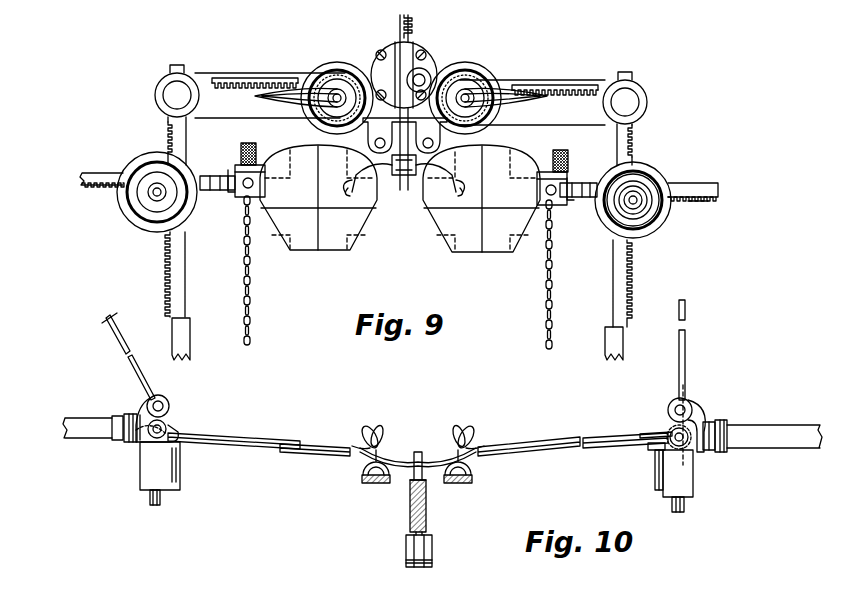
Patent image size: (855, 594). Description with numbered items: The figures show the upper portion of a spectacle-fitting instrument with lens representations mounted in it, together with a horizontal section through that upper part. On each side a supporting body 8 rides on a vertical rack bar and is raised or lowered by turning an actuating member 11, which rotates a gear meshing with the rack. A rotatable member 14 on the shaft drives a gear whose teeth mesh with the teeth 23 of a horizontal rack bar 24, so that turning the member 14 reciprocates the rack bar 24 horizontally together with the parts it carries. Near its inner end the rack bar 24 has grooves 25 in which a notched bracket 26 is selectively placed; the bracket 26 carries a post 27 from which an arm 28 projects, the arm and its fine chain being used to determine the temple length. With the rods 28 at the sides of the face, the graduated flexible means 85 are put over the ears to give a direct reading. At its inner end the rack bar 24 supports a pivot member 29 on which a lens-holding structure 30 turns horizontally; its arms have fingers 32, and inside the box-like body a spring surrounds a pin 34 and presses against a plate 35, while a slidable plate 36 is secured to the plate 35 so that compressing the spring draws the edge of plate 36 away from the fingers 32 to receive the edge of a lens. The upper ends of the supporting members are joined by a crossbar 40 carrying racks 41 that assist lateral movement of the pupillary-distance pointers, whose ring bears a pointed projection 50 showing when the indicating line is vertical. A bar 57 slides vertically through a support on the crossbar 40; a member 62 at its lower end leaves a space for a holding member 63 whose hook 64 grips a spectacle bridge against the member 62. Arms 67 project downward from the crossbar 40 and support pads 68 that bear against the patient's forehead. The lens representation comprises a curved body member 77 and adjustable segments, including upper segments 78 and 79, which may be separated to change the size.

In FIG. 9, the supporting body 8 is at (610, 176).
In FIG. 9, the actuating member 11 is at (618, 222).
In FIG. 10, the actuating member 11 is at (660, 372).
In FIG. 9, the member 14 is at (620, 206).
In FIG. 9, the teeth 23 is at (689, 202).
In FIG. 9, the rack bar 24 is at (672, 181).
In FIG. 10, the rack bar 24 is at (758, 430).
In FIG. 10, the grooves 25 is at (714, 418).
In FIG. 10, the bracket 26 is at (700, 410).
In FIG. 10, the post 27 is at (668, 404).
In FIG. 10, the arm 28 is at (686, 348).
In FIG. 10, the pivot member 29 is at (672, 430).
In FIG. 10, the lens-holding structure 30 is at (690, 485).
In FIG. 10, the fingers 32 is at (650, 434).
In FIG. 10, the pin 34 is at (686, 508).
In FIG. 10, the plate 35 is at (655, 455).
In FIG. 10, the plate 36 is at (655, 481).
In FIG. 9, the crossbar 40 is at (548, 83).
In FIG. 9, the racks 41 is at (232, 76).
In FIG. 9, the pointed projection 50 is at (335, 72).
In FIG. 10, the bar 57 is at (409, 514).
In FIG. 10, the member 62 is at (424, 500).
In FIG. 10, the holding member 63 is at (426, 538).
In FIG. 10, the hook 64 is at (419, 450).
In FIG. 9, the arms 67 is at (433, 140).
In FIG. 10, the arms 67 is at (385, 490).
In FIG. 10, the pads 68 is at (362, 470).
In FIG. 10, the curved body member 77 is at (572, 445).
In FIG. 10, the segment 78 is at (522, 445).
In FIG. 10, the segment 79 is at (598, 447).
In FIG. 9, the flexible means 85 is at (242, 256).
In FIG. 10, the flexible means 85 is at (104, 330).